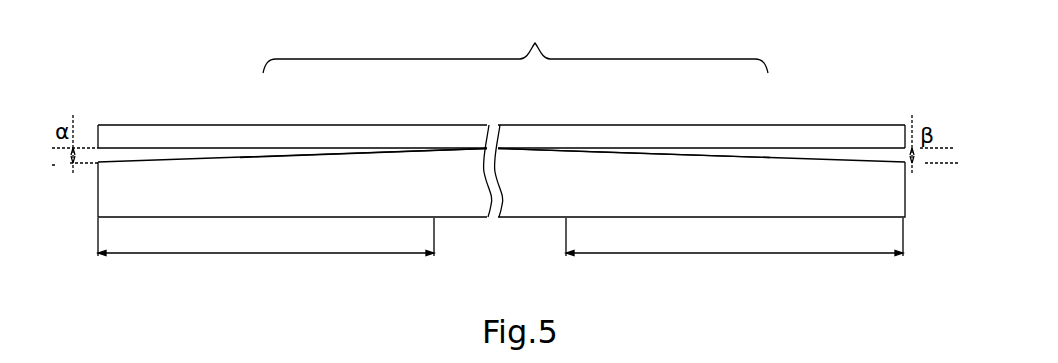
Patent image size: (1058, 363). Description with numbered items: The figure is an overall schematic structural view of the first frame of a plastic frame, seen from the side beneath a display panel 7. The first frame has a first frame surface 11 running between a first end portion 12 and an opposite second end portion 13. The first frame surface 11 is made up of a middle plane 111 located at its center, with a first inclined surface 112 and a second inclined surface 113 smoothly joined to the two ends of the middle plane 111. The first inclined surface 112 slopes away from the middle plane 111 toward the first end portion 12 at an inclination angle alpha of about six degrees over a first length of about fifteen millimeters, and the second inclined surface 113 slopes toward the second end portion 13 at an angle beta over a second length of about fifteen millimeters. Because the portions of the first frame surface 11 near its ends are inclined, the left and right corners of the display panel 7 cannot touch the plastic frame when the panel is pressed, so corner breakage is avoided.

The display panel 7 is at (143, 137).
The first frame surface 11 is at (515, 46).
The middle plane 111 is at (378, 150).
The first inclined surface 112 is at (241, 153).
The second inclined surface 113 is at (768, 158).
The first end portion 12 is at (98, 207).
The second end portion 13 is at (905, 200).